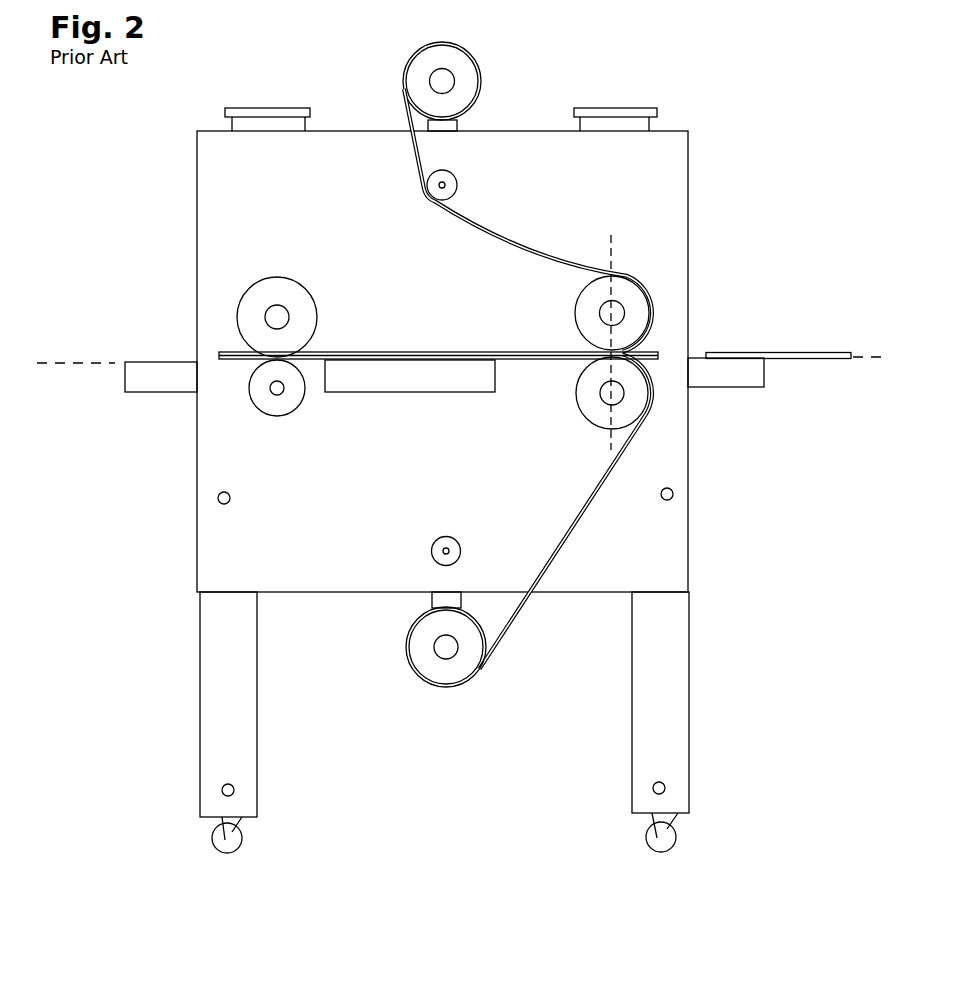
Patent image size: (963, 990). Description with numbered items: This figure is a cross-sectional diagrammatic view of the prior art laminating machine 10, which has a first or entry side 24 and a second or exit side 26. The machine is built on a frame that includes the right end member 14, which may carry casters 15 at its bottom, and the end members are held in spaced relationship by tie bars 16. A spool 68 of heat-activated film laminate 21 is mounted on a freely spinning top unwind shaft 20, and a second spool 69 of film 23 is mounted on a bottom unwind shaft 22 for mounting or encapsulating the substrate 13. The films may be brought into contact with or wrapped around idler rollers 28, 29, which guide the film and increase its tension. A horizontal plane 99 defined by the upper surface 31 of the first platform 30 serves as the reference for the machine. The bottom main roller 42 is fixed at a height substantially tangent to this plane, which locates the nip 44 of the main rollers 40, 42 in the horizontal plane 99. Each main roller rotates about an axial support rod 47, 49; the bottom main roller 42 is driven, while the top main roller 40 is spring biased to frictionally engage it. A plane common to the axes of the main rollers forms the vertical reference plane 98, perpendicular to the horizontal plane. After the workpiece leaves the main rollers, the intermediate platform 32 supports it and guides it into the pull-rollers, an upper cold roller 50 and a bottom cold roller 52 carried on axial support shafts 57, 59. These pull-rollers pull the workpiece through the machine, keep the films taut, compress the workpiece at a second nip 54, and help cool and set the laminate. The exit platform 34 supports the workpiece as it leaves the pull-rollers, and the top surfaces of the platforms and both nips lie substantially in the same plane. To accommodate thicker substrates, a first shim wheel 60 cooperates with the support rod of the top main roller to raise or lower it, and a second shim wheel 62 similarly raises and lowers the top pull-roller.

The laminating machine 10 is at (618, 39).
The substrate 13 is at (790, 352).
The right end member 14 is at (688, 215).
The casters 15 is at (212, 838).
The tie bars 16 is at (218, 498).
The top unwind shaft 20 is at (455, 57).
The heat-activated film laminate 21 is at (412, 117).
The bottom unwind shaft 22 is at (425, 663).
The film 23 is at (505, 628).
The entry side 24 is at (751, 154).
The exit side 26 is at (71, 225).
The idler roller 28 is at (457, 180).
The idler roller 29 is at (432, 545).
The first platform 30 is at (748, 387).
The upper surface 31 is at (695, 355).
The intermediate platform 32 is at (388, 392).
The exit platform 34 is at (157, 392).
The top main roller 40 is at (577, 302).
The bottom main roller 42 is at (600, 430).
The nip 44 is at (592, 352).
The axial support rod 47 is at (600, 305).
The axial support rod 49 is at (600, 400).
The upper cold roller 50 is at (310, 292).
The bottom cold roller 52 is at (250, 398).
The second nip 54 is at (300, 352).
The axial support shaft 57 is at (268, 312).
The axial support shaft 59 is at (278, 395).
The first shim wheel 60 is at (617, 104).
The second shim wheel 62 is at (285, 108).
The spool 68 is at (455, 81).
The second spool 69 is at (444, 647).
The vertical reference plane 98 is at (610, 246).
The horizontal plane 99 is at (57, 362).